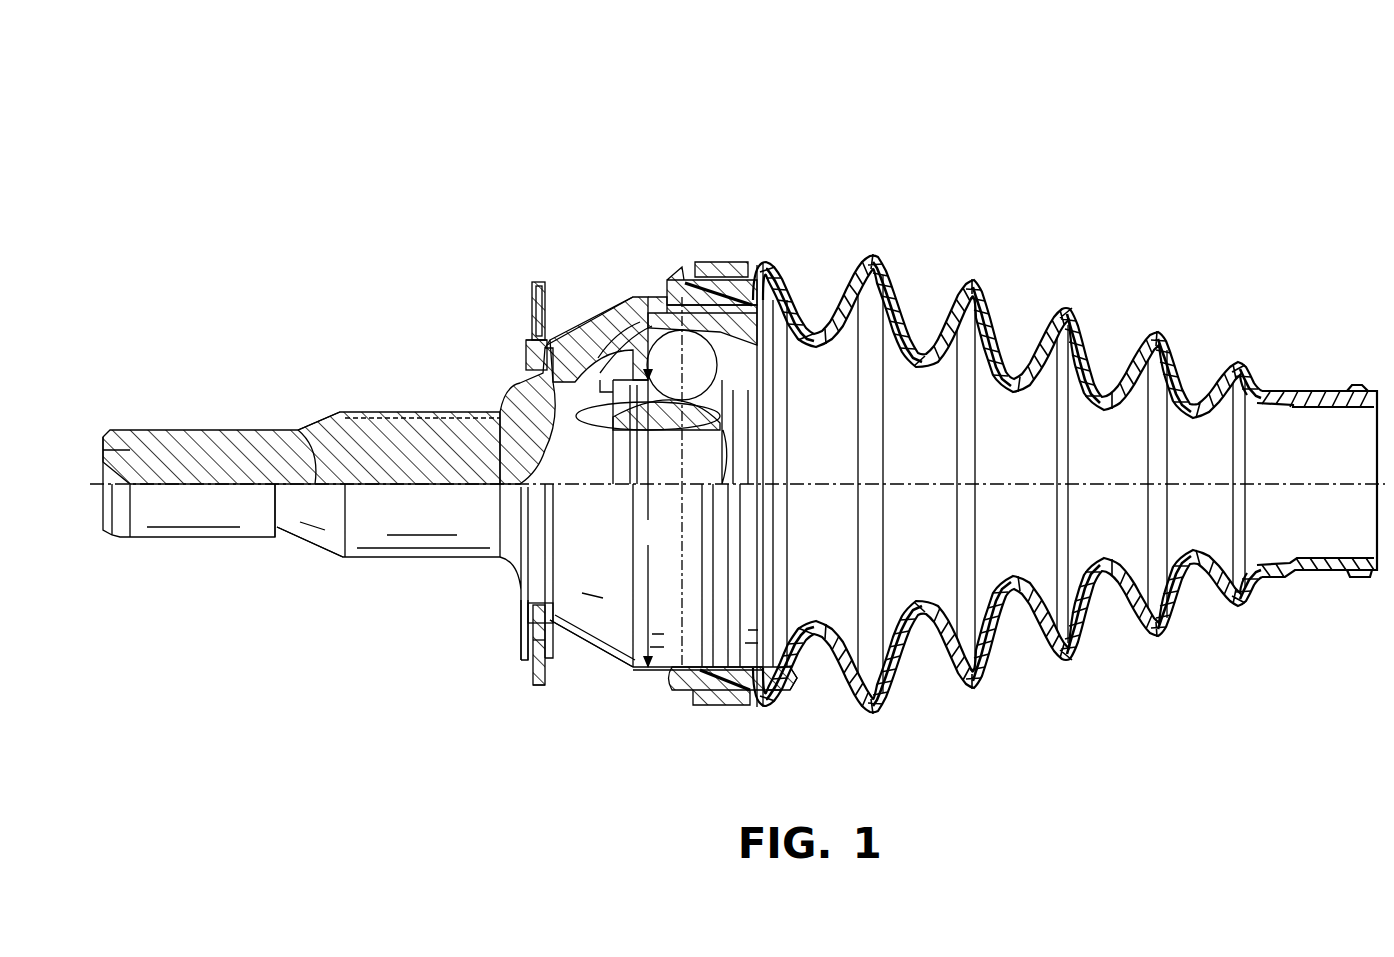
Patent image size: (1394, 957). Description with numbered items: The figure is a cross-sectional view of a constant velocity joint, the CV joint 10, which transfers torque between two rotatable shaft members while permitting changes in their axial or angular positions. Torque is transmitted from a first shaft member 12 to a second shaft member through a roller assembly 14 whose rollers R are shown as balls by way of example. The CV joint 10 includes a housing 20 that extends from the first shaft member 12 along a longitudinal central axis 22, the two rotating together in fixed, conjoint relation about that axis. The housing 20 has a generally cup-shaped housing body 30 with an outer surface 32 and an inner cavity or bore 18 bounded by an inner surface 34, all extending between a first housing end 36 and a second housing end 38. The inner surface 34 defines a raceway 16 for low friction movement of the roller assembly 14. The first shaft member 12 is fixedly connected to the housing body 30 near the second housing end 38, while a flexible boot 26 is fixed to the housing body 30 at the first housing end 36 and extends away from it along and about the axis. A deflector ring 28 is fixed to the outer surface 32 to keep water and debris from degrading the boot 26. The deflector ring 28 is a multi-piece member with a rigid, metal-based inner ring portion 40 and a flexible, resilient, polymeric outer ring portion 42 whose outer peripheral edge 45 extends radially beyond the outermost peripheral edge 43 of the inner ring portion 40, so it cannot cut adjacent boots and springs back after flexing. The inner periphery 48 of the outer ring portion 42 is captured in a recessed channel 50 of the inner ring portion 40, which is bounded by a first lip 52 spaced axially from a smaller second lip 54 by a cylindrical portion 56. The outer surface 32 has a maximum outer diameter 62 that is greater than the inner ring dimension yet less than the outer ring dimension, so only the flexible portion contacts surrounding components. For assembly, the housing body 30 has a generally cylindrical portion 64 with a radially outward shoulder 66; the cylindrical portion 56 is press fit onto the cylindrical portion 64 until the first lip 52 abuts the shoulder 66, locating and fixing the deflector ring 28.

The CV joint 10 is at (997, 157).
The first shaft member 12 is at (230, 428).
The roller assembly 14 is at (768, 378).
The raceway 16 is at (645, 302).
The bore 18 is at (765, 452).
The housing 20 is at (578, 700).
The longitudinal central axis 22 is at (300, 430).
The boot 26 is at (985, 283).
The deflector ring 28 is at (521, 690).
The housing body 30 is at (592, 327).
The outer surface 32 is at (631, 292).
The inner surface 34 is at (762, 270).
The first housing end 36 is at (803, 667).
The second housing end 38 is at (520, 575).
The inner ring portion 40 is at (523, 613).
The outer ring portion 42 is at (528, 660).
The outermost peripheral edge 43 is at (548, 320).
The outer peripheral edge 45 is at (533, 283).
The inner periphery 48 is at (540, 605).
The recessed channel 50 is at (528, 645).
The first lip 52 is at (555, 643).
The second lip 54 is at (530, 347).
The cylindrical portion 56 is at (543, 380).
The outer diameter 62 is at (649, 523).
The generally cylindrical portion 64 is at (527, 350).
The shoulder 66 is at (548, 345).
The rollers R is at (705, 360).